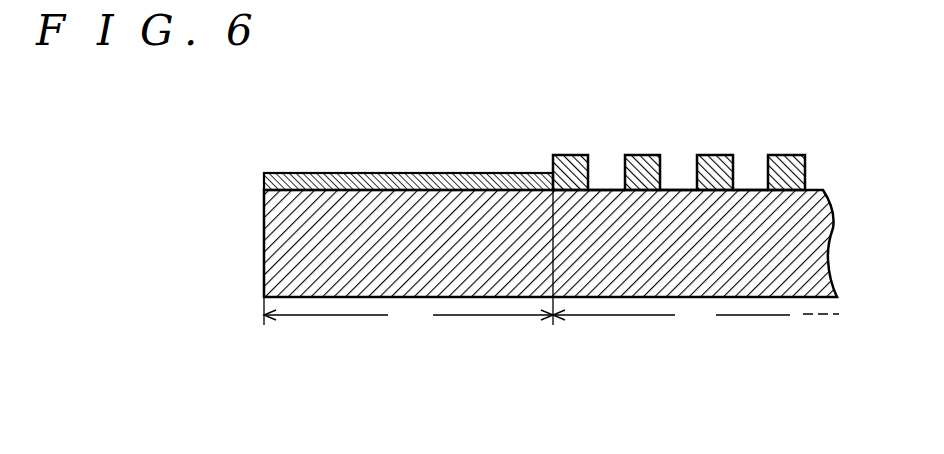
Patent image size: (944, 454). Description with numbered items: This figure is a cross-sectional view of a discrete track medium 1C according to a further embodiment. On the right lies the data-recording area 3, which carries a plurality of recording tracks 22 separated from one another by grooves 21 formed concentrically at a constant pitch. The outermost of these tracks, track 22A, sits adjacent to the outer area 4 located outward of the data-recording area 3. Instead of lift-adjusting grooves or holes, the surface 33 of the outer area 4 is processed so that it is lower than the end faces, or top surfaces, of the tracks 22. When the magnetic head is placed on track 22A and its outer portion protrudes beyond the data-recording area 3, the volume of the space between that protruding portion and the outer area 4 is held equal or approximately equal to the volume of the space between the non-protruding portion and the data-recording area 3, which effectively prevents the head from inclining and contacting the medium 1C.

The discrete track medium 1C is at (585, 352).
The surface of the outer area 33 is at (393, 172).
The track 22A is at (557, 155).
The recording tracks 22 is at (645, 155).
The grooves 21 is at (608, 177).
The outer area 4 is at (408, 317).
The data-recording area 3 is at (696, 317).